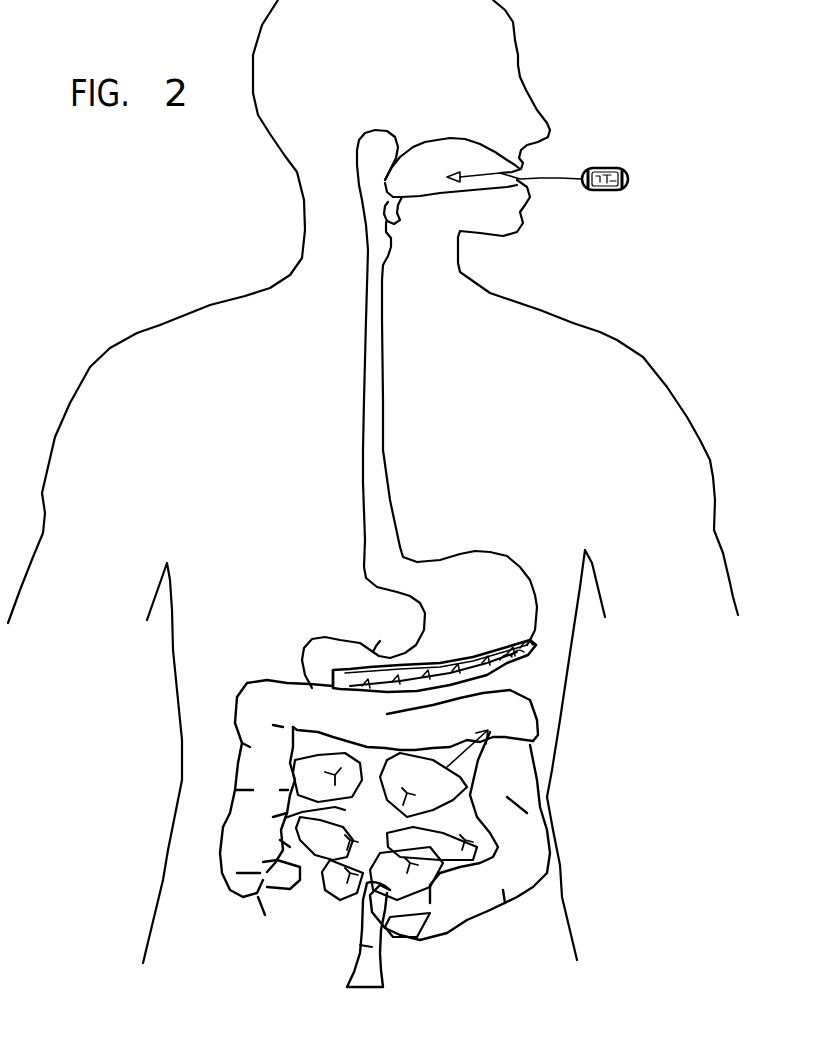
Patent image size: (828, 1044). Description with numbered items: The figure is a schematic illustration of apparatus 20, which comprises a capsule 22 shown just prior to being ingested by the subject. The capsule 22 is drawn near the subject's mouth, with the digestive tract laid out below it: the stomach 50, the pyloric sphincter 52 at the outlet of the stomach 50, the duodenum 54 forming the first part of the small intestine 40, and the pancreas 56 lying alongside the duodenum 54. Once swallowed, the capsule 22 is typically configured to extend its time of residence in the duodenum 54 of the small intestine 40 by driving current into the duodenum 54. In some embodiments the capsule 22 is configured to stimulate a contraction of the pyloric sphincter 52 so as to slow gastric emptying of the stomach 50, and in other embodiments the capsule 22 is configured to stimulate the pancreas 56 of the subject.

The apparatus 20 is at (620, 152).
The capsule 22 is at (618, 190).
The stomach 50 is at (495, 515).
The pyloric sphincter 52 is at (374, 650).
The duodenum 54 is at (290, 664).
The pancreas 56 is at (528, 648).
The small intestine 40 is at (485, 737).